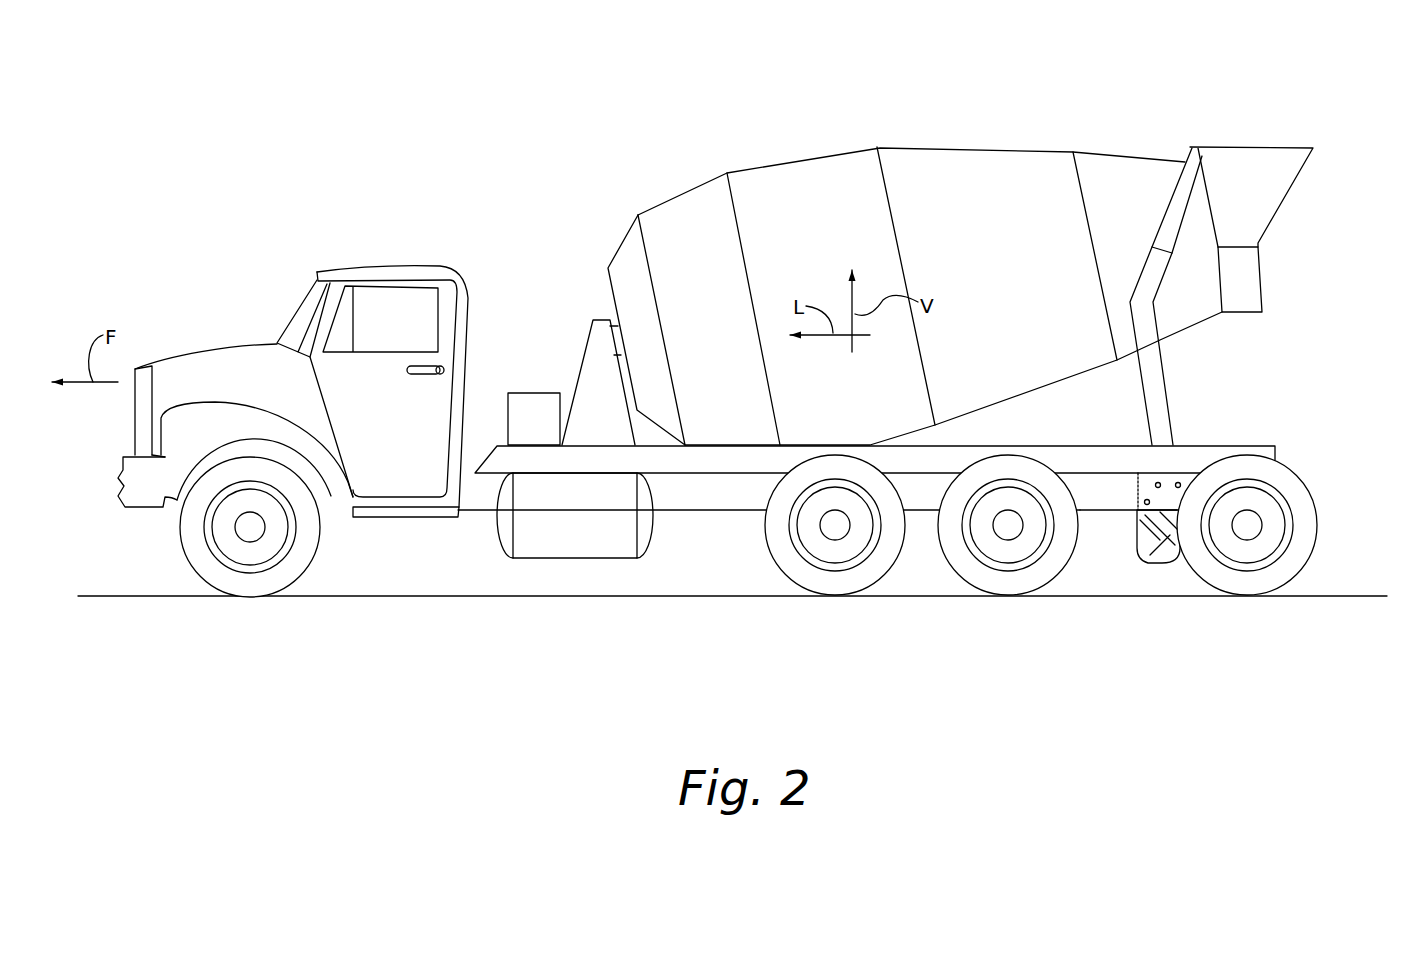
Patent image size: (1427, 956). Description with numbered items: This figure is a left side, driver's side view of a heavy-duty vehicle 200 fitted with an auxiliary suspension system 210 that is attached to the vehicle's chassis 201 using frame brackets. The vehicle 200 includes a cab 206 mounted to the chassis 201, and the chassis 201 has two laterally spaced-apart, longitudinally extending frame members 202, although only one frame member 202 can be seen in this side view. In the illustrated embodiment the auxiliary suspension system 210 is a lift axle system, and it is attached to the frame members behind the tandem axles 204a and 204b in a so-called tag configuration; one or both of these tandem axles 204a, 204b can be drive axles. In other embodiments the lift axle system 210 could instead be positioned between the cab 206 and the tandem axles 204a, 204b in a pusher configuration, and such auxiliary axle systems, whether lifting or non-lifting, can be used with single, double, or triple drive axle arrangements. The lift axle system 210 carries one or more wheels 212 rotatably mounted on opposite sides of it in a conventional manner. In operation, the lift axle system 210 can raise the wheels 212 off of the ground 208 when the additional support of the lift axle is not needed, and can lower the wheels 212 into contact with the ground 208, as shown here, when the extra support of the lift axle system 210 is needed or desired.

The heavy-duty vehicle 200 is at (680, 110).
The chassis 201 is at (723, 528).
The frame member 202 is at (1110, 512).
The tandem axle 204a is at (818, 527).
The tandem axle 204b is at (990, 530).
The cab 206 is at (357, 270).
The ground 208 is at (1337, 595).
The auxiliary suspension system 210 is at (1138, 558).
The wheels 212 is at (1318, 512).